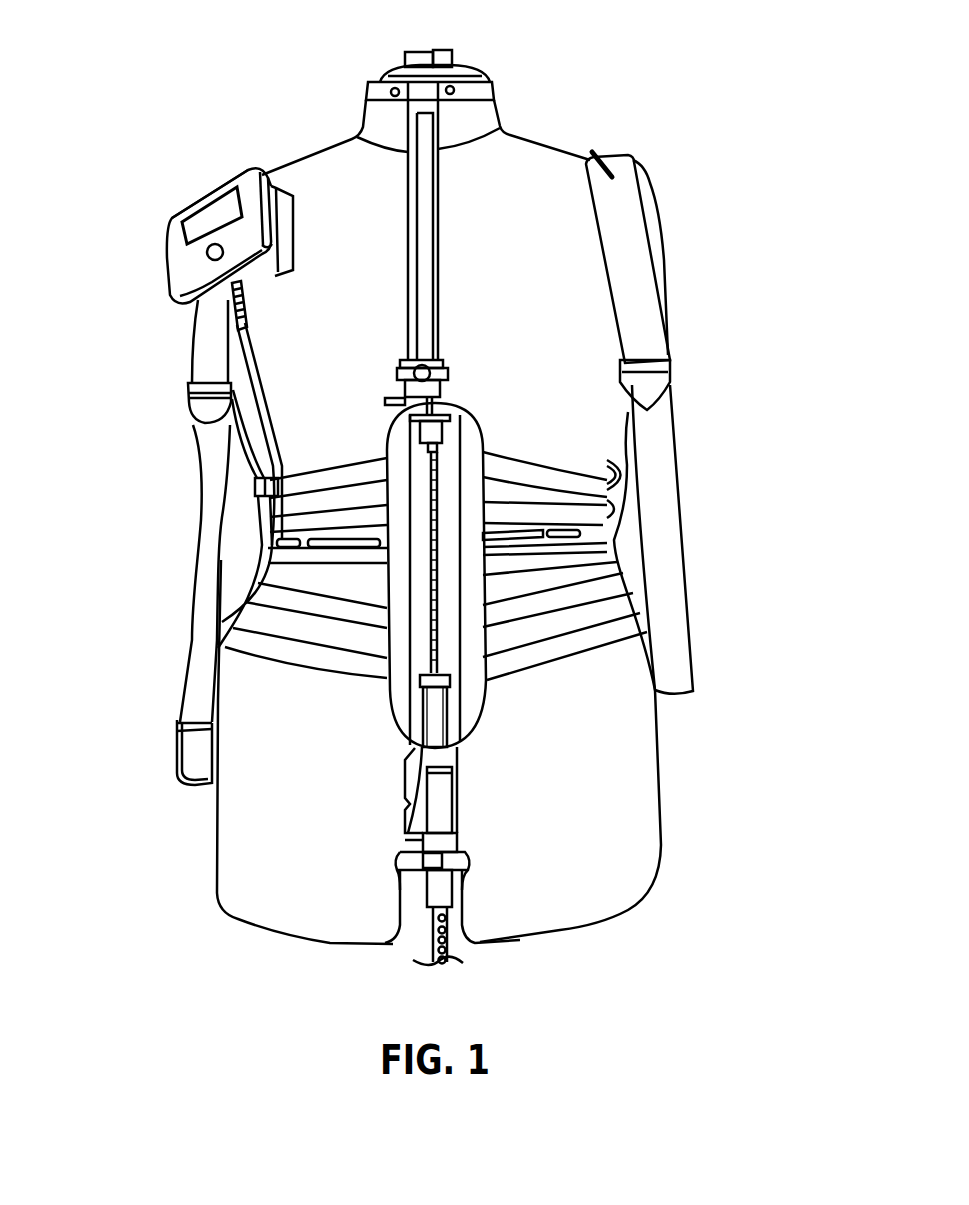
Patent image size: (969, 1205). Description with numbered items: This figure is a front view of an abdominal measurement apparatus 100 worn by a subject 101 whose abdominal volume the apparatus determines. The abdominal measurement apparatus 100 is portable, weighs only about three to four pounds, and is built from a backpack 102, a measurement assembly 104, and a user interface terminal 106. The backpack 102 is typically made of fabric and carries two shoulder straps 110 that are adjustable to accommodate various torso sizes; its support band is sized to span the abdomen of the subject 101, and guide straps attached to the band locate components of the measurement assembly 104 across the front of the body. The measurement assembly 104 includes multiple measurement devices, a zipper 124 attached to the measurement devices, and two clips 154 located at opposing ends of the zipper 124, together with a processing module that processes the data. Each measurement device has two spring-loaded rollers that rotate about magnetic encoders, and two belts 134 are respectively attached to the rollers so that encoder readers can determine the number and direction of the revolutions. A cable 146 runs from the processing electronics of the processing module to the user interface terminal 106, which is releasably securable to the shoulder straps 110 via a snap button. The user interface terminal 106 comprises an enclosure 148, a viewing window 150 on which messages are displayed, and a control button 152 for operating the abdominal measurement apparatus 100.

The abdominal measurement apparatus 100 is at (683, 404).
The subject 101 is at (525, 136).
The backpack 102 is at (182, 530).
The measurement assembly 104 is at (376, 733).
The user interface terminal 106 is at (202, 190).
The shoulder straps 110 is at (660, 277).
The zipper 124 is at (467, 404).
The belts 134 is at (302, 677).
The cable 146 is at (173, 744).
The enclosure 148 is at (166, 248).
The viewing window 150 is at (190, 220).
The control button 152 is at (202, 258).
The clips 154 is at (436, 659).